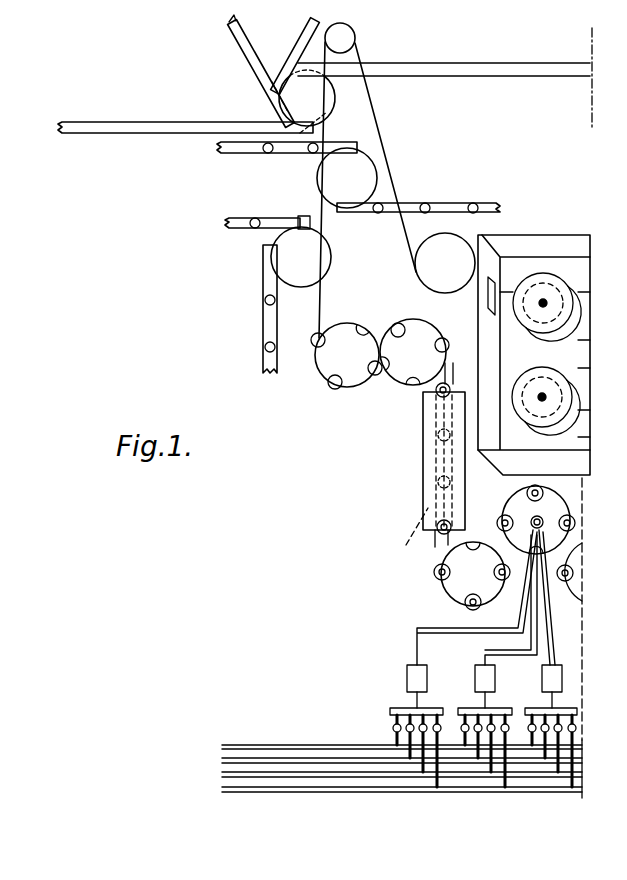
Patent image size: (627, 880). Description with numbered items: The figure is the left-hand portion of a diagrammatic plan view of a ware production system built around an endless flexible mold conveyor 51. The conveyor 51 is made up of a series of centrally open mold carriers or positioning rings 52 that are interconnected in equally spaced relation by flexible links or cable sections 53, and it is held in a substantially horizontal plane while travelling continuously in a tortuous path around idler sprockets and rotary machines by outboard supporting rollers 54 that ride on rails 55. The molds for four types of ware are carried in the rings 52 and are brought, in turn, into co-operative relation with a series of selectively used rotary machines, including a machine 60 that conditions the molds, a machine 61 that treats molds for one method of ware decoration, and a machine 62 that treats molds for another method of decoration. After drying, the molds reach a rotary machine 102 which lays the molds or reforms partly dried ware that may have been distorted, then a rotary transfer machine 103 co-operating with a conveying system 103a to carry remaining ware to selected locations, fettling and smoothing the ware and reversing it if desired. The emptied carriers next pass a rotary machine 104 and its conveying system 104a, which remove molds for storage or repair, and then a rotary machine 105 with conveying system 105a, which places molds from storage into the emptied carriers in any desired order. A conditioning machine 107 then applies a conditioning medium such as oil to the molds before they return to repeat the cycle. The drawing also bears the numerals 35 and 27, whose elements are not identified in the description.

The conveying system 103a is at (318, 62).
The rotary transfer machine 103 is at (321, 98).
The endless flexible mold conveyor 51 is at (387, 141).
The rotary machine 104 is at (361, 176).
The conveying system 104a is at (335, 207).
The rotary machine 105 is at (315, 263).
The conveying system 105a is at (263, 283).
The rotary machine 102 is at (427, 261).
The conditioning machine 107 is at (415, 341).
The mold carriers or positioning rings 52 is at (375, 388).
The flexible links or cable sections 53 is at (438, 546).
The outboard supporting rollers 54 is at (528, 486).
The rails 55 is at (456, 368).
The rotary machine 60 is at (471, 565).
The rotary machine 61 is at (523, 514).
The rotary machine 62 is at (576, 584).
The reel housing 35 is at (557, 234).
The frame 27 is at (8, 515).